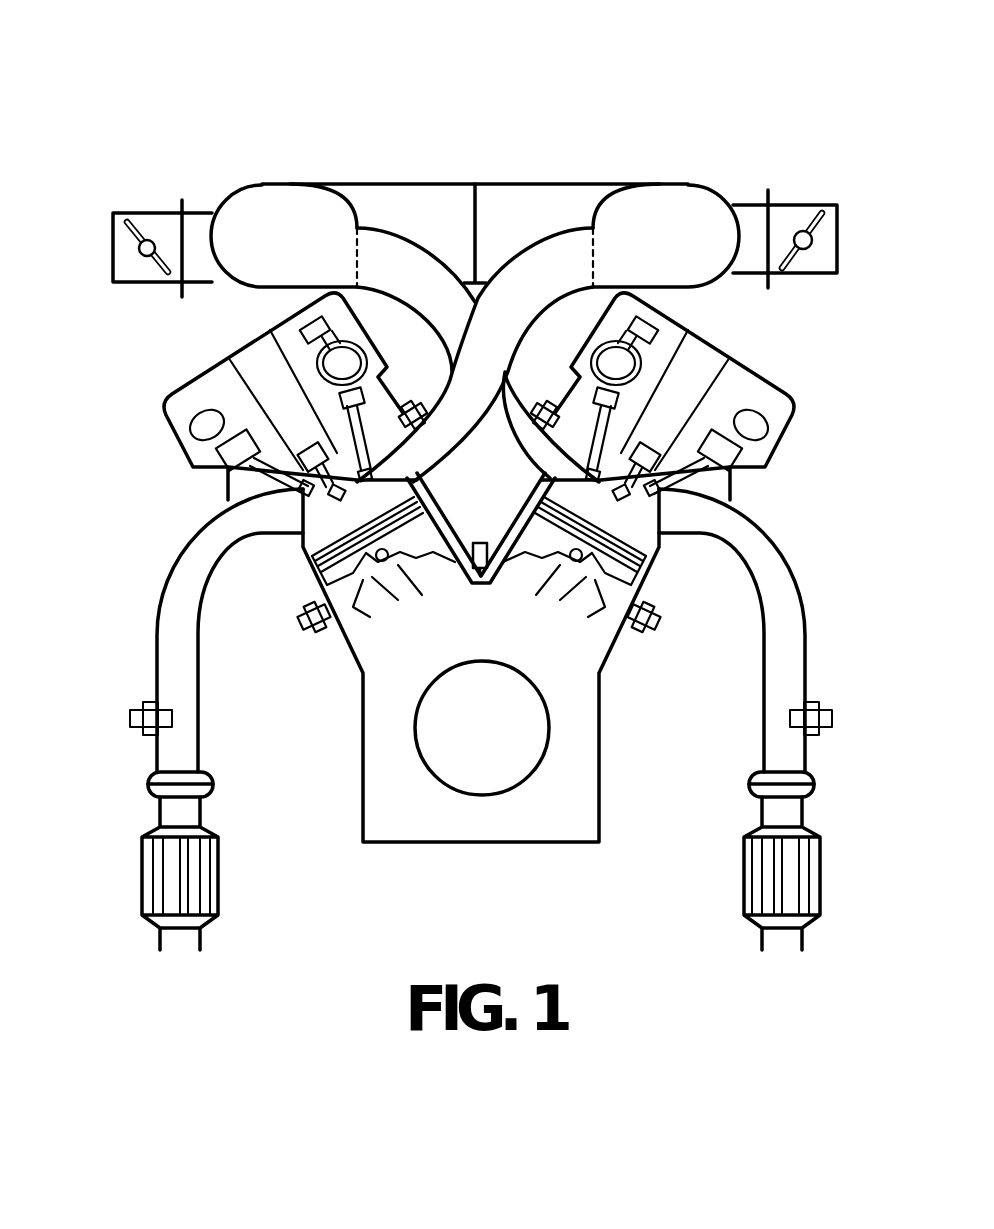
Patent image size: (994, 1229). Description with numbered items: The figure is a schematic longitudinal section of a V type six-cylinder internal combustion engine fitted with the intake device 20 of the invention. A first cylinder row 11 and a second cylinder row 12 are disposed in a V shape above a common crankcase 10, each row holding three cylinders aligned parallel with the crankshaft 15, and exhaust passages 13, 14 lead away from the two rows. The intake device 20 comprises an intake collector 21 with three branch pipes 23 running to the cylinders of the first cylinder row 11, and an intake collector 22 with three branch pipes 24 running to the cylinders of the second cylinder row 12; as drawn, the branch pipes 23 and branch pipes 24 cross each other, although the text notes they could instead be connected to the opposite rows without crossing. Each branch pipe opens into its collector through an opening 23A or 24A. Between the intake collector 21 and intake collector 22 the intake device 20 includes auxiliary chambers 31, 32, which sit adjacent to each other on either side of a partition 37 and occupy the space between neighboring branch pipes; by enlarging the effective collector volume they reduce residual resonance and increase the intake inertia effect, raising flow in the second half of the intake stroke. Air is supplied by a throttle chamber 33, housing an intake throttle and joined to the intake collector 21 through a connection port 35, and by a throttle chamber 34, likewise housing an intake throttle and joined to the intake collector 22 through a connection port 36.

The crankcase 10 is at (422, 820).
The first cylinder row 11 is at (343, 647).
The second cylinder row 12 is at (627, 627).
The exhaust passage 13 is at (157, 655).
The exhaust passage 14 is at (806, 643).
The crankshaft 15 is at (512, 790).
The intake device 20 is at (468, 241).
The intake collector 21 is at (666, 187).
The intake collector 22 is at (284, 187).
The branch pipe 23 is at (507, 312).
The branch pipe 24 is at (440, 302).
The opening 23A is at (598, 250).
The opening 24A is at (353, 250).
The auxiliary chamber 31 is at (513, 195).
The auxiliary chamber 32 is at (388, 210).
The throttle chamber 33 is at (797, 213).
The throttle chamber 34 is at (153, 212).
The connection port 35 is at (746, 203).
The connection port 36 is at (200, 222).
The partition 37 is at (473, 232).